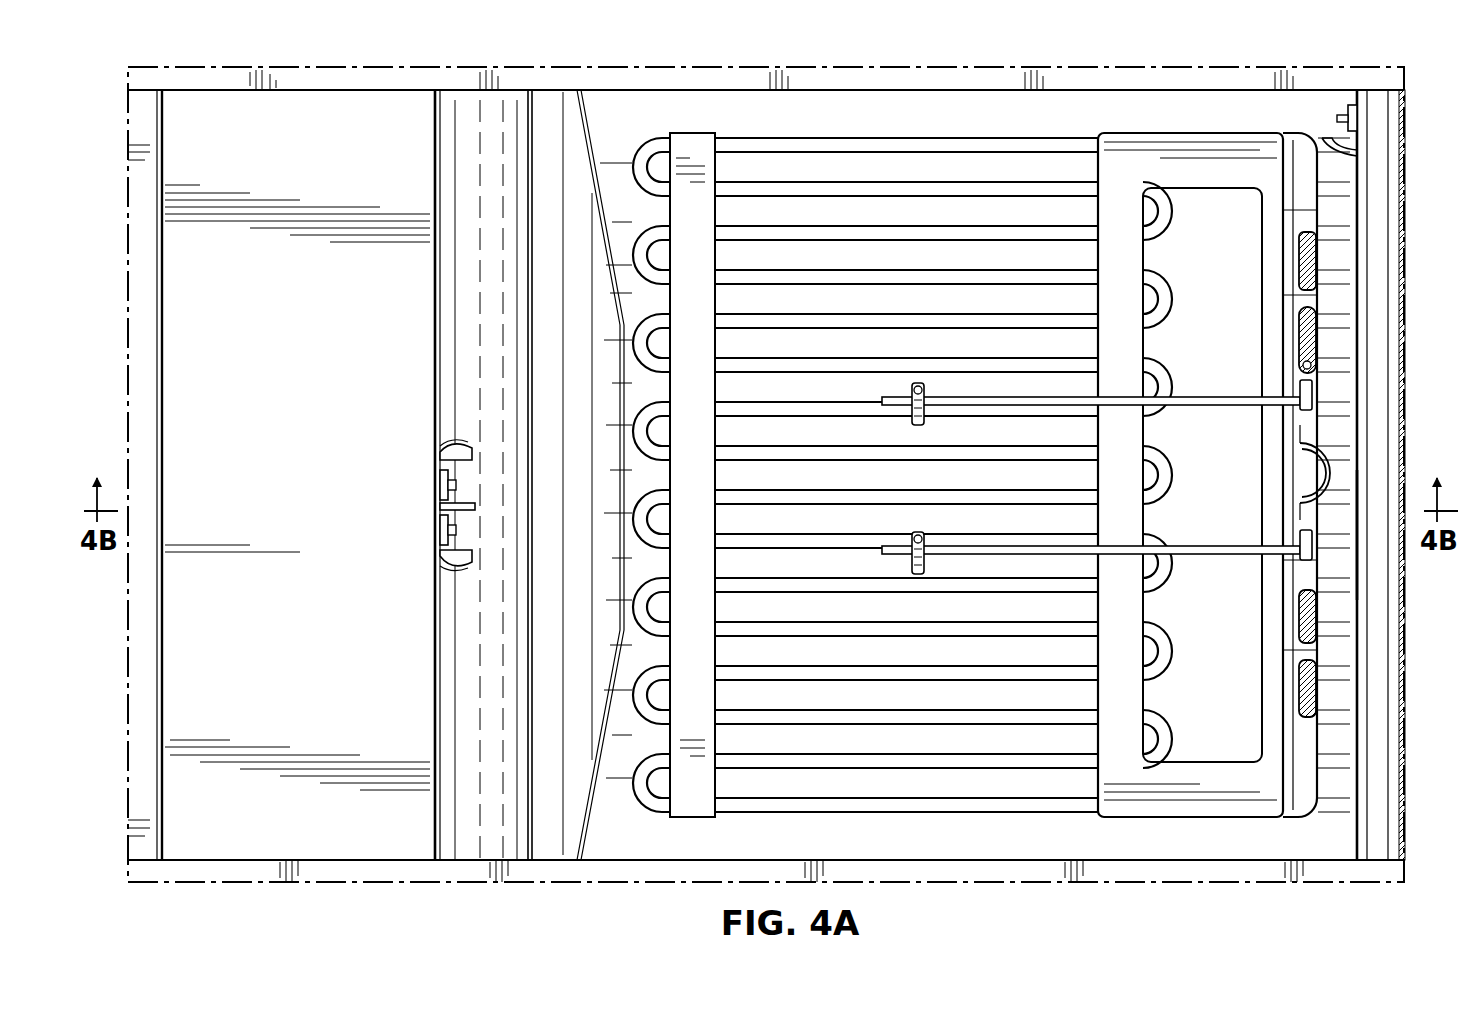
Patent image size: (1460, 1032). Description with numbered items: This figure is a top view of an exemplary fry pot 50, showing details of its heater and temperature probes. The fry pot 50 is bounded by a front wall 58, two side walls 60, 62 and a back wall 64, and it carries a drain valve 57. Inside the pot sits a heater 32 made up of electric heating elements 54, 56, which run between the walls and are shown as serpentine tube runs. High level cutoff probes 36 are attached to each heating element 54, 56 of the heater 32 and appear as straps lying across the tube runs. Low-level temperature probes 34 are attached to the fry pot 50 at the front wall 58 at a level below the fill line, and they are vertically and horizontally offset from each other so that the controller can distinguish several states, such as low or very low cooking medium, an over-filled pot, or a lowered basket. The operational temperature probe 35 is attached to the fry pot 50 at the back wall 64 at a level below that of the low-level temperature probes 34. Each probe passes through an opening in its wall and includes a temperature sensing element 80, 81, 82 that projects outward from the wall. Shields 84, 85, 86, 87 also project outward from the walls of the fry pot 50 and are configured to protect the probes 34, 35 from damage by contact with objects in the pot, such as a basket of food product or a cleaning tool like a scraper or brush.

The heater 32 is at (1166, 112).
The low-level temperature probes 34 is at (517, 470).
The operational temperature probe 35 is at (1345, 104).
The high level cutoff probes 36 is at (893, 396).
The fry pot 50 is at (212, 66).
The electric heating element 54 is at (636, 150).
The electric heating element 56 is at (636, 798).
The drain valve 57 is at (1320, 450).
The front wall 58 is at (440, 293).
The side wall 60 is at (860, 98).
The side wall 62 is at (870, 860).
The back wall 64 is at (1357, 562).
The temperature sensing element 80 is at (456, 485).
The temperature sensing element 81 is at (456, 530).
The temperature sensing element 82 is at (1337, 119).
The shield 84 is at (465, 450).
The shield 85 is at (476, 506).
The shield 86 is at (458, 566).
The shield 87 is at (1338, 152).